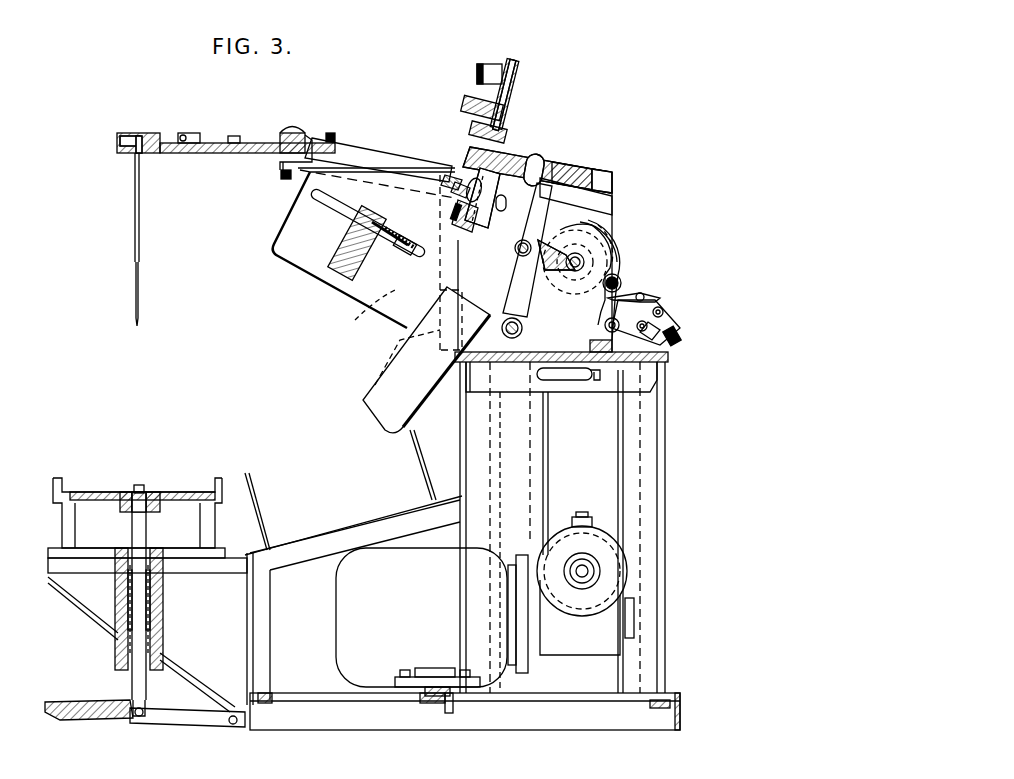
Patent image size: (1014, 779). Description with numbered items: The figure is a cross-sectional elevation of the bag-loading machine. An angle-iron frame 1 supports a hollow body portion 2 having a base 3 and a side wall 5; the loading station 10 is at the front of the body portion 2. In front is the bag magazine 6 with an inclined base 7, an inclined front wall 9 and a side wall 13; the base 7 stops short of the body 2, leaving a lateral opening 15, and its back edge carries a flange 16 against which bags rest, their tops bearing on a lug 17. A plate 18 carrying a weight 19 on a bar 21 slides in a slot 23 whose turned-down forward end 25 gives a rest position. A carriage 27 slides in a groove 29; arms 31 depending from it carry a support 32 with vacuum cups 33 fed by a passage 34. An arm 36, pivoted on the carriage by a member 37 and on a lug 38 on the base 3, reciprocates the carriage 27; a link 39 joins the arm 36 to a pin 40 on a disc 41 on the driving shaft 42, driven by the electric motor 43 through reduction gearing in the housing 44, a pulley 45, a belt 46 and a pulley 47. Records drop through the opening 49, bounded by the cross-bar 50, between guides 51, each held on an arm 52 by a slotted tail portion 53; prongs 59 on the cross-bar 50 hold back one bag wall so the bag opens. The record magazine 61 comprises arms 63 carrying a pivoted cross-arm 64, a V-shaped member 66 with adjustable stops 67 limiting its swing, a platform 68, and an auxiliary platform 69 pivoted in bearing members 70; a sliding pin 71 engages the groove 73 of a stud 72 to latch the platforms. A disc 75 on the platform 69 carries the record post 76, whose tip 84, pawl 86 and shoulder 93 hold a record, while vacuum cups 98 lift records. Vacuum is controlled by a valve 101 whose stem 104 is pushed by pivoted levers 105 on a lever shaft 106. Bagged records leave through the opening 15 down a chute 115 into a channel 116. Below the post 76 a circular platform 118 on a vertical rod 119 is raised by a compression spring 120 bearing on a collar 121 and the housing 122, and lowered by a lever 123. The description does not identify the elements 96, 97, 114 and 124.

The angle-iron frame 1 is at (700, 535).
The hollow body portion 2 is at (632, 218).
The base 3 is at (575, 370).
The side wall 5 is at (600, 228).
The magazine for bags 6 is at (346, 250).
The inclined base 7 is at (340, 290).
The inclined front wall 9 is at (306, 178).
The loading station 10 is at (445, 283).
The side wall 13 is at (280, 250).
The lateral opening 15 is at (372, 375).
The flange or lip 16 is at (410, 322).
The inwardly directed lug 17 is at (394, 225).
The plate 18 is at (360, 295).
The weight 19 is at (345, 260).
The bar 21 is at (340, 228).
The slot 23 is at (395, 275).
The forward end of slot 25 is at (312, 194).
The carriage 27 is at (580, 170).
The groove 29 is at (612, 182).
The arm 31 is at (488, 228).
The support 32 is at (465, 230).
The vacuum cups 33 is at (450, 215).
The passage 34 is at (458, 226).
The arm 36 is at (512, 275).
The member 37 is at (525, 163).
The lug 38 is at (512, 340).
The link 39 is at (548, 242).
The pin 40 is at (575, 252).
The disc 41 is at (620, 283).
The driving shaft 42 is at (618, 265).
The electric motor 43 is at (395, 660).
The housing 44 is at (605, 620).
The pulley 45 is at (625, 571).
The belt 46 is at (623, 485).
The pulley 47 is at (612, 245).
The opening 49 is at (462, 184).
The cross-bar 50 is at (450, 176).
The guide 51 is at (470, 194).
The arm 52 is at (534, 156).
The slotted tail portion 53 is at (502, 211).
The prongs 59 is at (456, 196).
The record magazine 61 is at (205, 223).
The arm 63 is at (365, 152).
The cross-arm 64 is at (298, 133).
The V-shaped member 66 is at (325, 135).
The adjustable stop 67 is at (338, 137).
The platform 68 is at (212, 143).
The auxiliary platform 69 is at (145, 133).
The bearing members 70 is at (180, 133).
The sliding pin 71 is at (118, 143).
The stud 72 is at (235, 136).
The circumferential groove 73 is at (242, 143).
The disc 75 is at (125, 153).
The record post 76 is at (134, 205).
The tip 84 is at (136, 327).
The pawl 86 is at (134, 318).
The shoulder 93 is at (140, 318).
The upright post 96 is at (512, 62).
The post plate 97 is at (502, 70).
The vacuum cups 98 is at (476, 73).
The valve 101 is at (680, 334).
The valve stem 104 is at (663, 312).
The pivoted levers 105 is at (642, 292).
The lever shaft 106 is at (650, 340).
The pin 114 is at (134, 488).
The chute 115 is at (375, 395).
The channel 116 is at (412, 458).
The circular platform 118 is at (168, 492).
The vertical rod 119 is at (146, 530).
The compression spring 120 is at (150, 615).
The collar 121 is at (165, 575).
The housing 122 is at (163, 638).
The lever 123 is at (193, 722).
The stop block 124 is at (470, 118).